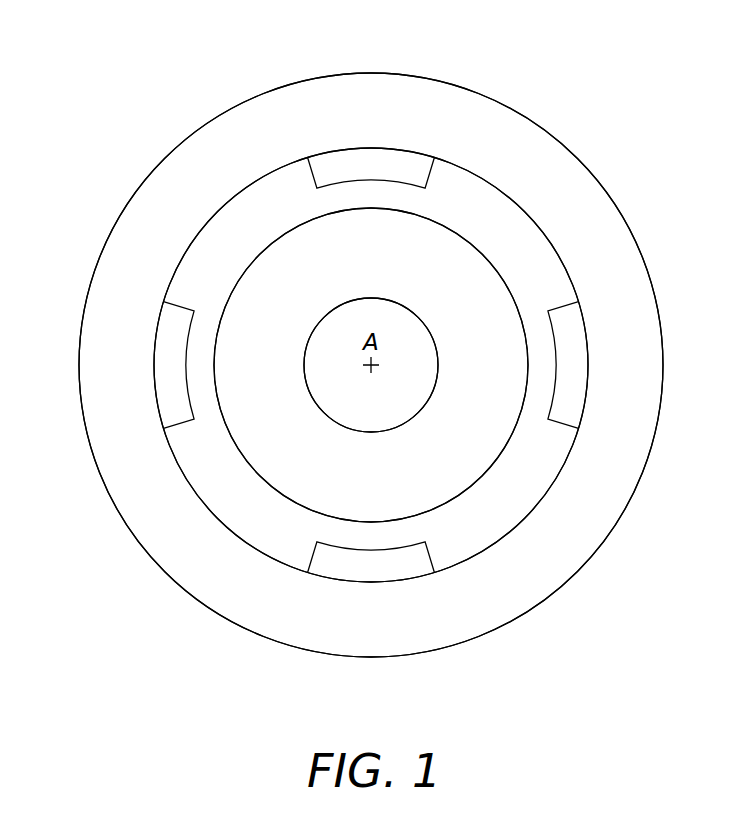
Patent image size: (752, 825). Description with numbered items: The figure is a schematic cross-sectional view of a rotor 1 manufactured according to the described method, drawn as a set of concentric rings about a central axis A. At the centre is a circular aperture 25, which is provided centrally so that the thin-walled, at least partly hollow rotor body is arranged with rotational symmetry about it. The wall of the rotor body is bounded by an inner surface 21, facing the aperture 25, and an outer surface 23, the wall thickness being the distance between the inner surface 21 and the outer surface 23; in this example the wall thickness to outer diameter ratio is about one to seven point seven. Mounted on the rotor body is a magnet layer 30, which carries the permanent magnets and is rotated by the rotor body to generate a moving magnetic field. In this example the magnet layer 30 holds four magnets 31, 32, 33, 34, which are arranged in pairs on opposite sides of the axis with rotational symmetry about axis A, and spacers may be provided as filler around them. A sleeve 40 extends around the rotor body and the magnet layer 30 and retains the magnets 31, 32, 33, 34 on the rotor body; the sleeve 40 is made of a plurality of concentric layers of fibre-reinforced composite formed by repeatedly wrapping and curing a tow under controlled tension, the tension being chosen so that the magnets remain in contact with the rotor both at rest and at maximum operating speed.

The rotor 1 is at (153, 93).
The sleeve 40 is at (600, 213).
The magnet layer 30 is at (495, 198).
The magnet 31 is at (370, 157).
The magnet 32 is at (578, 365).
The magnet 33 is at (370, 573).
The magnet 34 is at (163, 365).
The outer surface 23 is at (253, 468).
The inner surface 21 is at (310, 376).
The aperture 25 is at (401, 398).